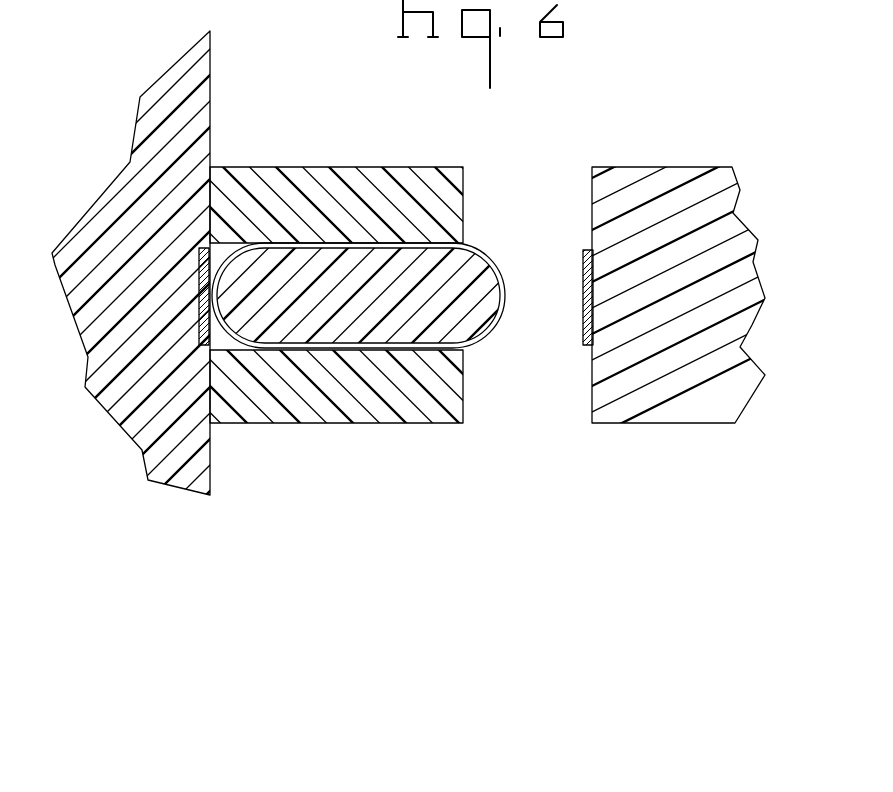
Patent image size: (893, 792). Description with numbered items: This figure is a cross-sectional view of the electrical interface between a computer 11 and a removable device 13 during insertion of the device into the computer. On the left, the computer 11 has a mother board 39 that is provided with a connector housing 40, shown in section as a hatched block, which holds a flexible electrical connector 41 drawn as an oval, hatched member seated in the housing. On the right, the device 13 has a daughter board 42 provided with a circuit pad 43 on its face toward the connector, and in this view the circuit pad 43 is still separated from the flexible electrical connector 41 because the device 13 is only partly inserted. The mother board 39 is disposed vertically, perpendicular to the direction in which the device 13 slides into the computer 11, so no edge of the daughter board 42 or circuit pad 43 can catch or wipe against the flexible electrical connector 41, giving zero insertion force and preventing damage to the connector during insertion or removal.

The computer 11 is at (155, 483).
The device 13 is at (668, 425).
The mother board 39 is at (138, 258).
The connector housing 40 is at (333, 410).
The flexible electrical connector 41 is at (341, 285).
The daughter board 42 is at (667, 222).
The circuit pad 43 is at (583, 268).